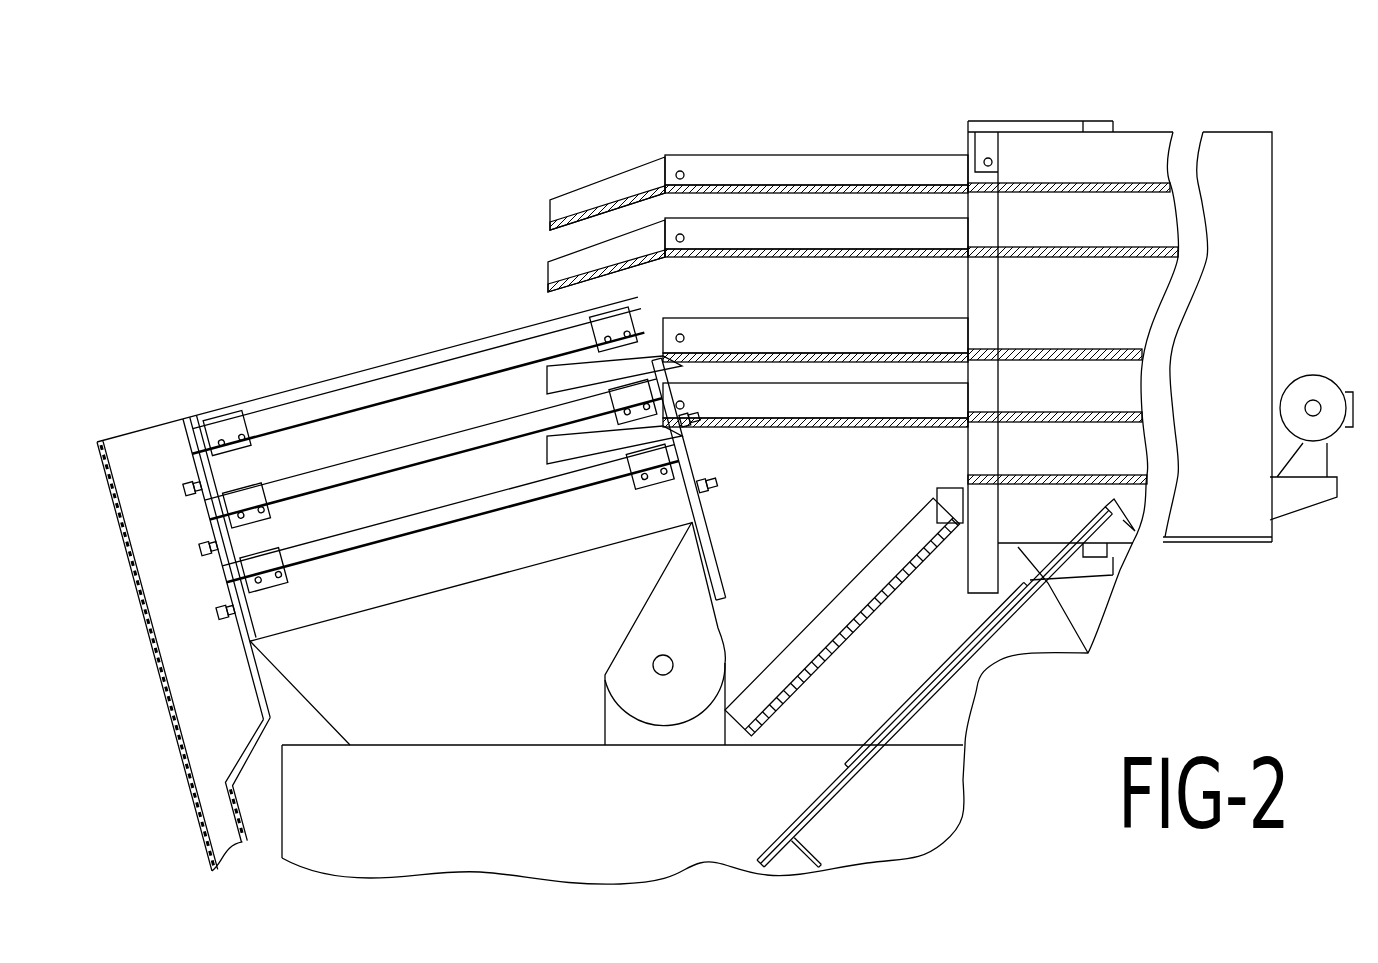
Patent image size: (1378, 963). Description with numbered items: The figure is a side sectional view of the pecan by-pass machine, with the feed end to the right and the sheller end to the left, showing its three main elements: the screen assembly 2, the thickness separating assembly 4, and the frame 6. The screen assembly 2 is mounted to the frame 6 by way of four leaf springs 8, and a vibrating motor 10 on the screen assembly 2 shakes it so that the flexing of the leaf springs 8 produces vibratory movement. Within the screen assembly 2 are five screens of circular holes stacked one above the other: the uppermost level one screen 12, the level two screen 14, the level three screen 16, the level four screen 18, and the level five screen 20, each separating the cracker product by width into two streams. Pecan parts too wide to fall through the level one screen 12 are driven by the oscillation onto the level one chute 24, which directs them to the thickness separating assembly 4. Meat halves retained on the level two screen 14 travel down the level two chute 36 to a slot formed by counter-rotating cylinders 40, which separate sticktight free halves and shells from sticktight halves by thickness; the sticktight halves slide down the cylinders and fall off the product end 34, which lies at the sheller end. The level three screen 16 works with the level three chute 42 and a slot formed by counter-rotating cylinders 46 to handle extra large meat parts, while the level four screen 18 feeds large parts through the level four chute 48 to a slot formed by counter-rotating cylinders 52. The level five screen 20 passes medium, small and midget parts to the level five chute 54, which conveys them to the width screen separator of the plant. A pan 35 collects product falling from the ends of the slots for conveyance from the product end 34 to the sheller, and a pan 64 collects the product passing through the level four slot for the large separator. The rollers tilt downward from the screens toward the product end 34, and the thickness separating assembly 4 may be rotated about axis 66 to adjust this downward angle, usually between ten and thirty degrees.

The screen assembly 2 is at (1120, 309).
The thickness separating assembly 4 is at (707, 275).
The frame 6 is at (480, 845).
The leaf springs 8 is at (843, 792).
The vibrating motor 10 is at (1313, 378).
The level one screen 12 is at (1100, 187).
The level two screen 14 is at (1103, 242).
The level three screen 16 is at (1100, 342).
The level four screen 18 is at (1102, 412).
The level five screen 20 is at (1097, 476).
The level one chute 24 is at (800, 175).
The product end 34 is at (438, 575).
The pan 35 is at (168, 808).
The level two chute 36 is at (805, 250).
The counter-rotating cylinders 40 is at (421, 398).
The level three chute 42 is at (843, 325).
The counter-rotating cylinders 46 is at (439, 471).
The level four chute 48 is at (922, 420).
The counter-rotating cylinders 52 is at (380, 456).
The level five chute 54 is at (883, 578).
The pan 64 is at (495, 687).
The axis 66 is at (660, 658).